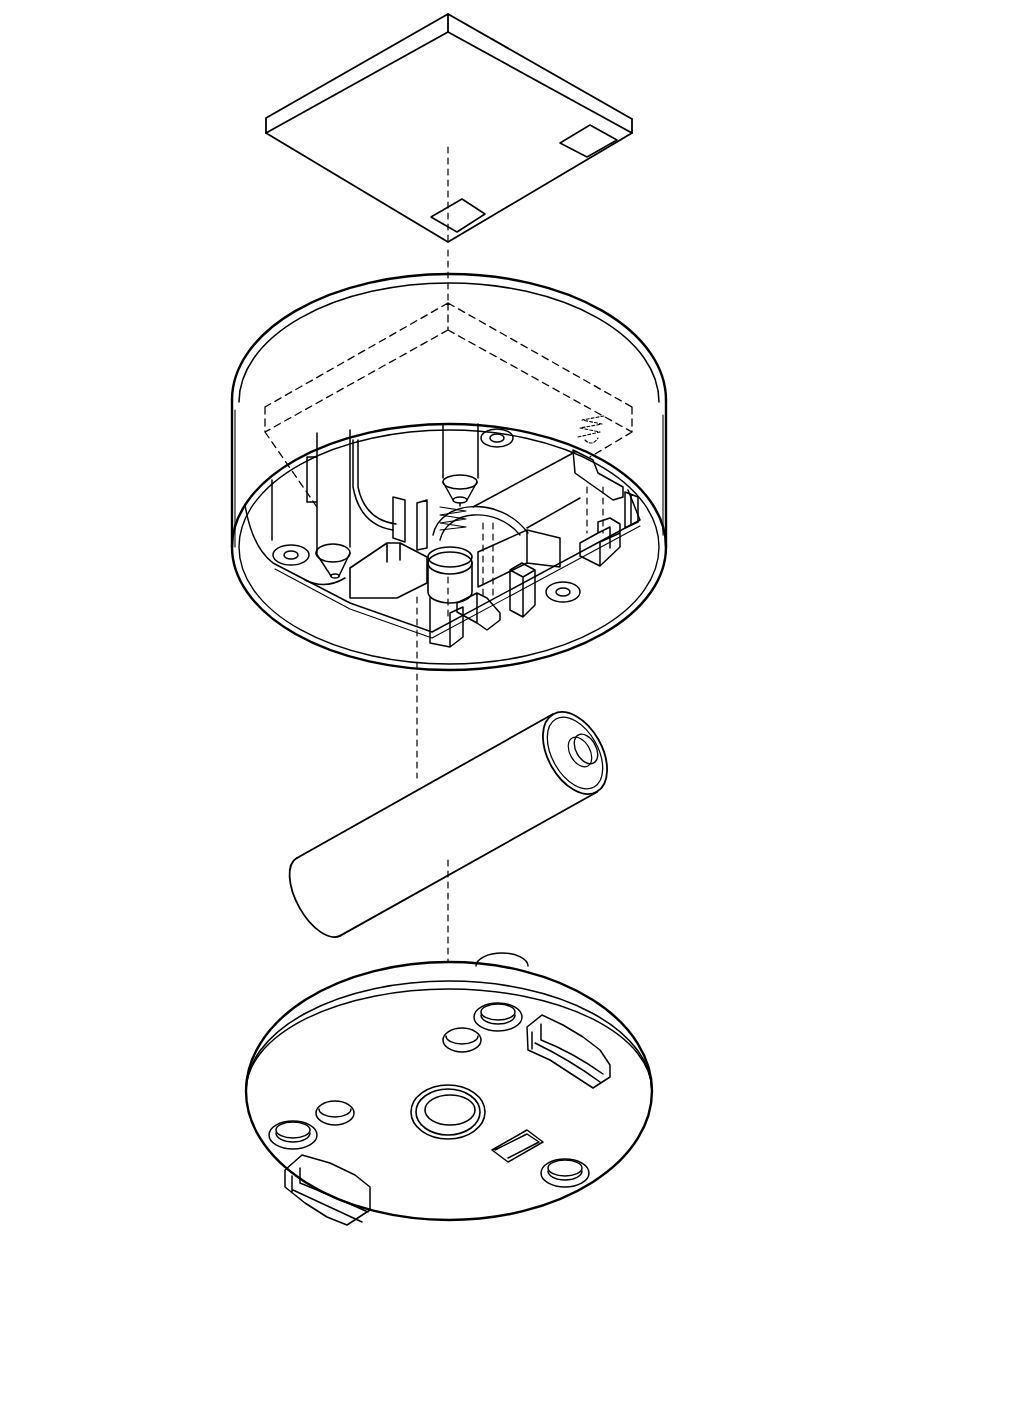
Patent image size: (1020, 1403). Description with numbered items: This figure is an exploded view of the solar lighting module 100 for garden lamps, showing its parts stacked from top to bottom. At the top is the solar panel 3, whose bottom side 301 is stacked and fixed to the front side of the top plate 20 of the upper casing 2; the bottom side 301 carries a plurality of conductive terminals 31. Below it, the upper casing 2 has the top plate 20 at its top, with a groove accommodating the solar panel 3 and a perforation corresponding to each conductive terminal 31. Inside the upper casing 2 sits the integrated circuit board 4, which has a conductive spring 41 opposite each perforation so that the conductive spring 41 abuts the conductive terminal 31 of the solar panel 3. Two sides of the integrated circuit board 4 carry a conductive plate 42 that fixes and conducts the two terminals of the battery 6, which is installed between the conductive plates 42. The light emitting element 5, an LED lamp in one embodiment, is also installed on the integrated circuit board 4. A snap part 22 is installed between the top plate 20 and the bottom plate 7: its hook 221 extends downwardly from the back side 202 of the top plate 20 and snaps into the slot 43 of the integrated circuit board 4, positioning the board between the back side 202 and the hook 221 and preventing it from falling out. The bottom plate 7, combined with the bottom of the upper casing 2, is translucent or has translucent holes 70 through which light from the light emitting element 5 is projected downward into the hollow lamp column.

The solar lighting module 100 is at (787, 1247).
The solar panel 3 is at (540, 75).
The bottom side 301 is at (307, 145).
The conductive terminal 31 is at (592, 143).
The upper casing 2 is at (640, 470).
The top plate 20 is at (449, 472).
The back side 202 is at (523, 347).
The snap part 22 is at (536, 570).
The hook 221 is at (600, 556).
The integrated circuit board 4 is at (565, 595).
The conductive spring 41 is at (598, 428).
The conductive plate 42 is at (617, 498).
The slot 43 is at (578, 472).
The light emitting element 5 is at (450, 600).
The battery 6 is at (380, 822).
The bottom plate 7 is at (632, 1036).
The translucent hole 70 is at (448, 1107).